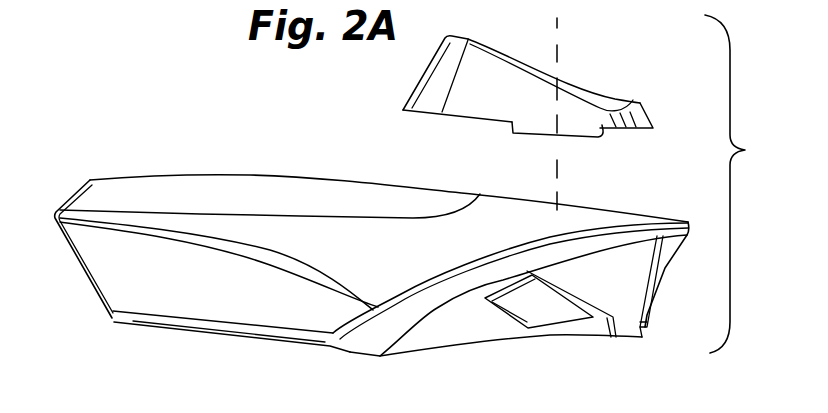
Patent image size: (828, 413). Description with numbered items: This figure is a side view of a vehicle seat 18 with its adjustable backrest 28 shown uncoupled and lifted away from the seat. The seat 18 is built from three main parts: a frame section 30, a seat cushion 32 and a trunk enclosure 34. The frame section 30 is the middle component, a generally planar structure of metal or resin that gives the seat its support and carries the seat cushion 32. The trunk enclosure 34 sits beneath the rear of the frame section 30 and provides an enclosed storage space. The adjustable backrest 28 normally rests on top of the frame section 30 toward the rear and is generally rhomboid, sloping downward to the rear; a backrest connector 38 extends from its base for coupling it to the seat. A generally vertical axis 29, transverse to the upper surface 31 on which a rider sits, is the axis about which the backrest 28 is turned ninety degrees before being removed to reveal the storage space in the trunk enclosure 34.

The vehicle seat 18 is at (648, 201).
The adjustable backrest 28 is at (523, 97).
The vertical axis 29 is at (561, 18).
The frame section 30 is at (133, 318).
The upper surface 31 is at (353, 183).
The seat cushion 32 is at (310, 228).
The trunk enclosure 34 is at (626, 323).
The backrest connector 38 is at (560, 134).